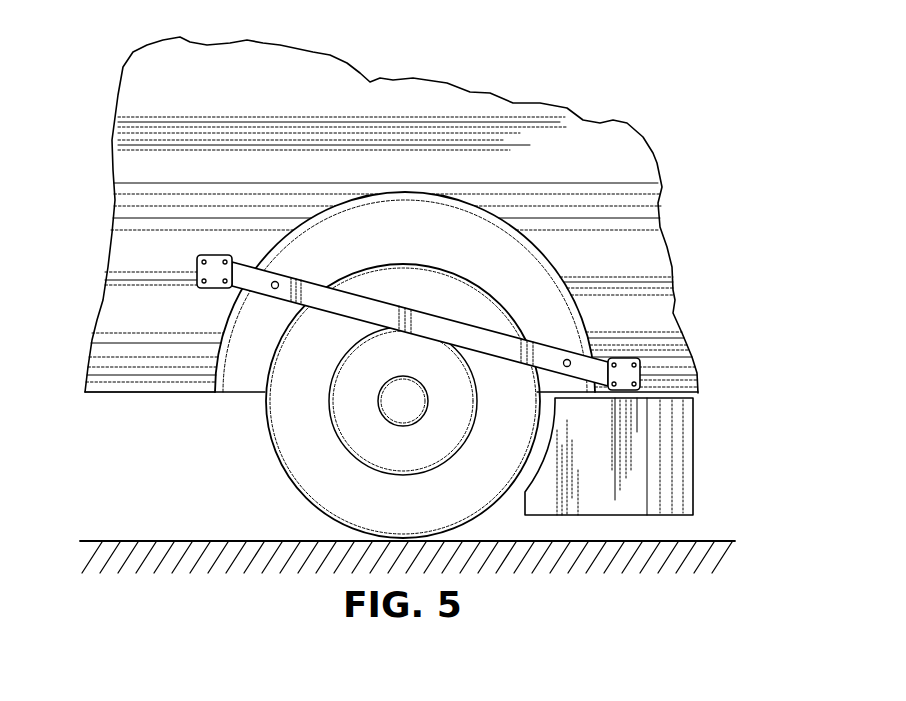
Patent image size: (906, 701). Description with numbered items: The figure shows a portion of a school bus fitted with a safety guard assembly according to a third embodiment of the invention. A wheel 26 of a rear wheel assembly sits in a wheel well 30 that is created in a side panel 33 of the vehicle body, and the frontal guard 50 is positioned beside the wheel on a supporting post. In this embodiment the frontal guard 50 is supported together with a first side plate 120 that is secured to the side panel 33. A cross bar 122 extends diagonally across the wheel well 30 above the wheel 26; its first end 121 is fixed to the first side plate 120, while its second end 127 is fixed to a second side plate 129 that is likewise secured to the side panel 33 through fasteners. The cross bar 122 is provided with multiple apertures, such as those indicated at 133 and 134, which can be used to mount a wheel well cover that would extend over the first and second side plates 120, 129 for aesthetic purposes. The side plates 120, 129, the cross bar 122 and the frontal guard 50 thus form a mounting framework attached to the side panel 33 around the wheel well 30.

The side panel 33 is at (512, 121).
The wheel well 30 is at (492, 232).
The wheel 26 is at (299, 460).
The frontal guard 50 is at (702, 462).
The cross bar 122 is at (428, 321).
The second end 127 is at (240, 281).
The first end 121 is at (598, 368).
The aperture 133 is at (273, 290).
The aperture 134 is at (566, 358).
The second side plate 129 is at (197, 269).
The first side plate 120 is at (645, 372).